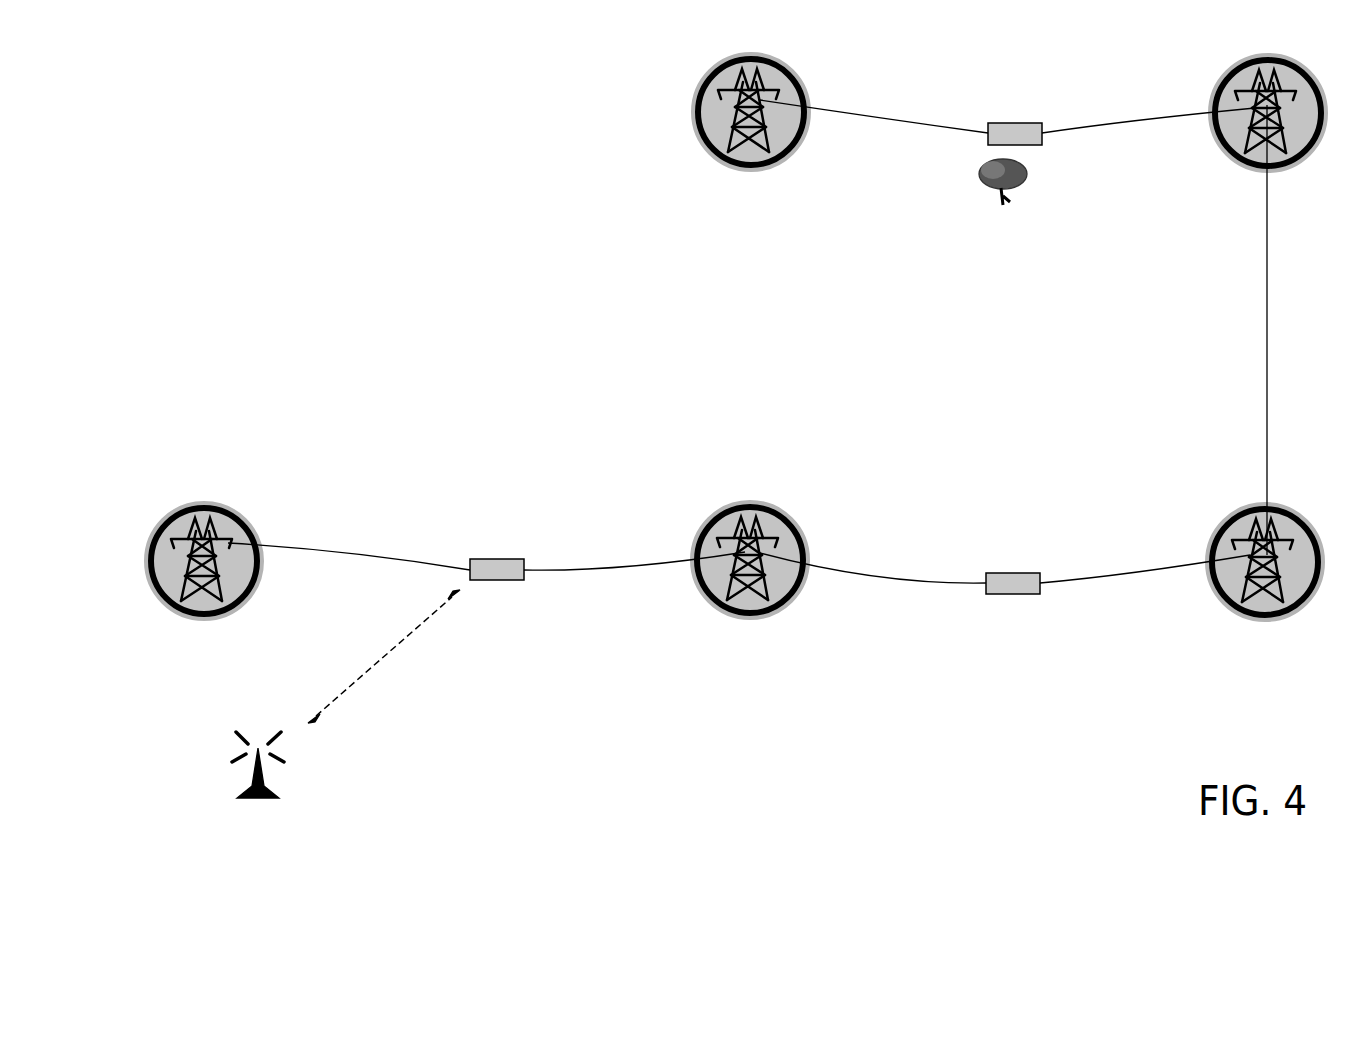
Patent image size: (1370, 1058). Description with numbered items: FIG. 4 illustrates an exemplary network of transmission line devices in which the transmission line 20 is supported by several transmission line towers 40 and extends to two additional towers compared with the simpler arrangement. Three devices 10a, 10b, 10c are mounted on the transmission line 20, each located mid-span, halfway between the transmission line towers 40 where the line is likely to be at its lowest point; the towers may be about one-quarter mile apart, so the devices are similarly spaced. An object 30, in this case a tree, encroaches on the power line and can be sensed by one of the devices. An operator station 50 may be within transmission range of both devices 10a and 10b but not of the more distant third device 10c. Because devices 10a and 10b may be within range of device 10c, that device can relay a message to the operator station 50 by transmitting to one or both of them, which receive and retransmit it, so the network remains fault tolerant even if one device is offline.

The device 10a is at (492, 570).
The device 10b is at (1010, 583).
The third device 10c is at (1010, 133).
The transmission line 20 is at (595, 568).
The object 30 is at (988, 188).
The transmission line towers 40 is at (730, 133).
The operator station 50 is at (272, 798).